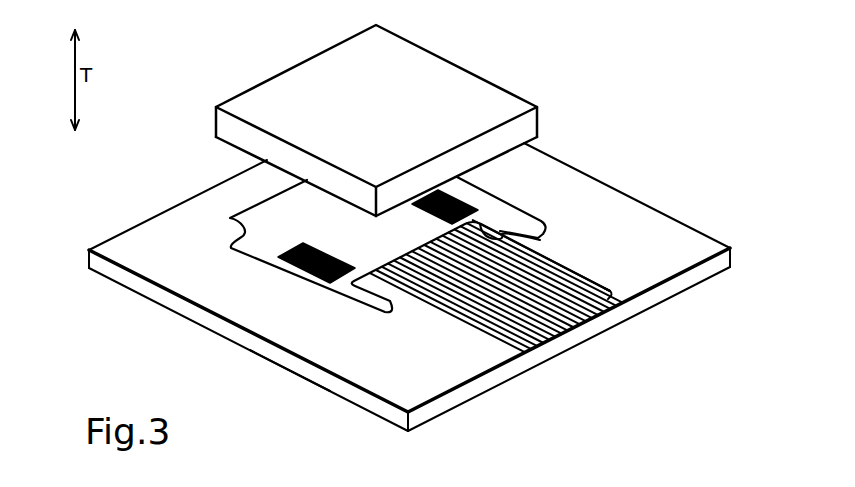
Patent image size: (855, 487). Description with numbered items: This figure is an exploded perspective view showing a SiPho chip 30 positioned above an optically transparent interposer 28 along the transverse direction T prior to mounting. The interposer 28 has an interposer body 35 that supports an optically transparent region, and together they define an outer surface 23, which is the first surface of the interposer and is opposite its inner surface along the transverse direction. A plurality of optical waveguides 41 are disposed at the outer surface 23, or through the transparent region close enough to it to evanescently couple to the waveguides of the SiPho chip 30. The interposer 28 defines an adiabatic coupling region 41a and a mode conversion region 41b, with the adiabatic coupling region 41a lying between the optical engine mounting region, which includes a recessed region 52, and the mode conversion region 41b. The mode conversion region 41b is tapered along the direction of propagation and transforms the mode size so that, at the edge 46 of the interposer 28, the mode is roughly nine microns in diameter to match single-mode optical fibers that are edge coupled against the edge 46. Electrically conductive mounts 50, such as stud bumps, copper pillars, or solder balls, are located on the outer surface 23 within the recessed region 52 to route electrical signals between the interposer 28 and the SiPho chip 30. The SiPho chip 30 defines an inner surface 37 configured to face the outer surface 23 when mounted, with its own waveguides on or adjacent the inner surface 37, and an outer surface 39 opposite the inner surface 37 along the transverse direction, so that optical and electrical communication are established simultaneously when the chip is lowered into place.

The outer surface 23 is at (140, 253).
The optically transparent interposer 28 is at (215, 322).
The SiPho chip 30 is at (332, 111).
The interposer body 35 is at (295, 352).
The inner surface 37 is at (230, 143).
The outer surface 39 is at (390, 68).
The optical waveguides 41 is at (512, 216).
The adiabatic coupling region 41a is at (490, 232).
The mode conversion region 41b is at (547, 255).
The edge 46 is at (660, 293).
The electrically conductive mounts 50 is at (283, 264).
The recessed region 52 is at (253, 205).